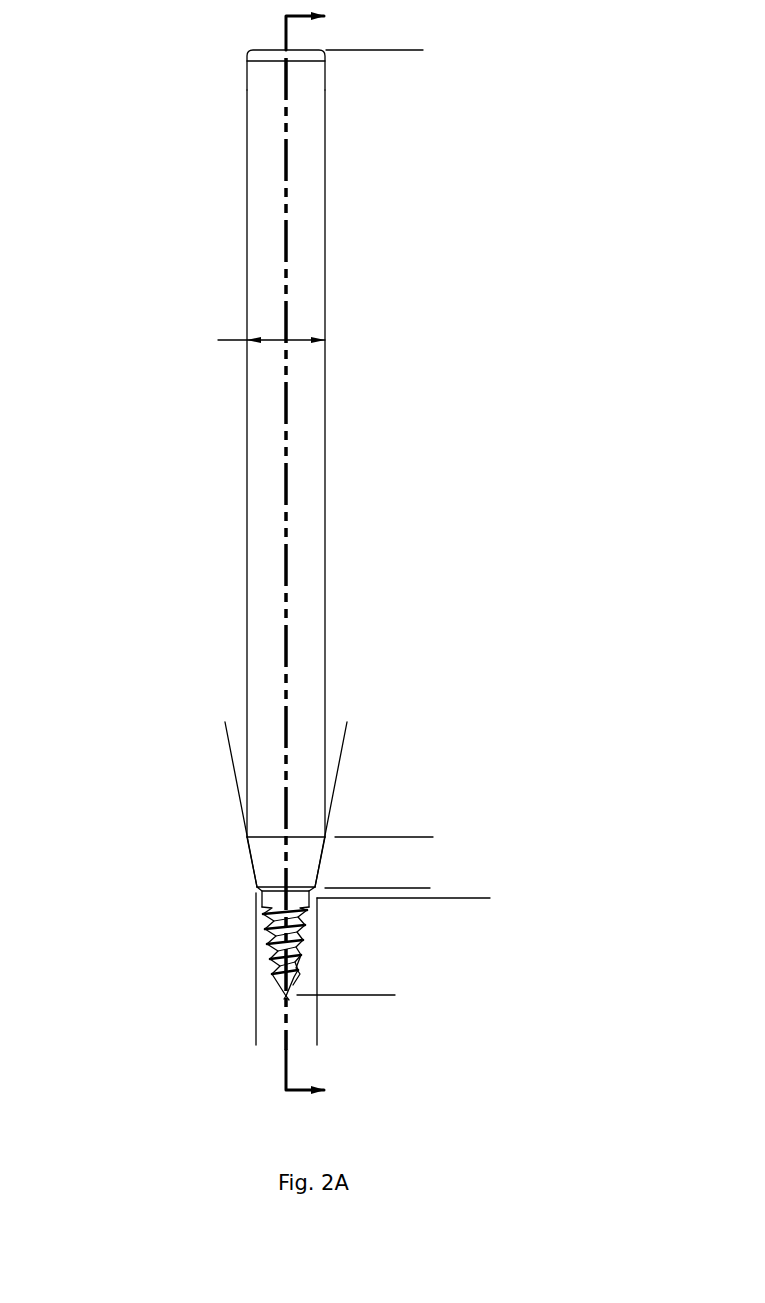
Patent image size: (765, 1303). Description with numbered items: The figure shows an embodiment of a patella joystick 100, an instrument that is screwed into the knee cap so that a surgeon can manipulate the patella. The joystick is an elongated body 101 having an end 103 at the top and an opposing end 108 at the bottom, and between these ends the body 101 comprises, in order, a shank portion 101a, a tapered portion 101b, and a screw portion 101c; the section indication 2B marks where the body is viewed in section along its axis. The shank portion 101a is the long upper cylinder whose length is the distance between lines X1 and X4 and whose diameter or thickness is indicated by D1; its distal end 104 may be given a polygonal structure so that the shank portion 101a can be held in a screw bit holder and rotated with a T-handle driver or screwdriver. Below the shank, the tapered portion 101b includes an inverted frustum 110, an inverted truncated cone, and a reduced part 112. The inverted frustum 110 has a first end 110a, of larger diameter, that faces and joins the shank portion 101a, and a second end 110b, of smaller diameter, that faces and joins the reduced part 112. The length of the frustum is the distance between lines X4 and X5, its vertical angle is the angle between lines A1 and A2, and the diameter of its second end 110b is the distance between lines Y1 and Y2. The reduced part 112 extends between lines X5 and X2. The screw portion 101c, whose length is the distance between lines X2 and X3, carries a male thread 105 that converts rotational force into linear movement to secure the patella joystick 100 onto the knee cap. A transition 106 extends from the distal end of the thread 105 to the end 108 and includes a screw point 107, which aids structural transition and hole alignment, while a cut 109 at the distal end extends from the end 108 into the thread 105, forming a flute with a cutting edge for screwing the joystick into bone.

The patella joystick 100 is at (371, 422).
The elongated body 101 is at (310, 526).
The shank portion 101a is at (232, 163).
The tapered portion 101b is at (179, 874).
The screw portion 101c is at (232, 976).
The end 103 is at (278, 48).
The distal end of the shank portion 104 is at (247, 90).
The thread 105 is at (262, 945).
The transition 106 is at (272, 990).
The screw point 107 is at (281, 1003).
The end 108 is at (292, 1000).
The cut 109 is at (303, 972).
The inverted frustum 110 is at (236, 859).
The first end 110a is at (247, 837).
The second end 110b is at (258, 889).
The reduced part 112 is at (260, 893).
The diameter or thickness D1 is at (256, 340).
The line X1 is at (393, 50).
The line X2 is at (421, 898).
The line X3 is at (364, 996).
The line X4 is at (403, 838).
The line X5 is at (394, 888).
The line Y1 is at (255, 983).
The line Y2 is at (315, 985).
The line A1 is at (232, 791).
The line A2 is at (338, 791).
The section line 2B is at (328, 556).